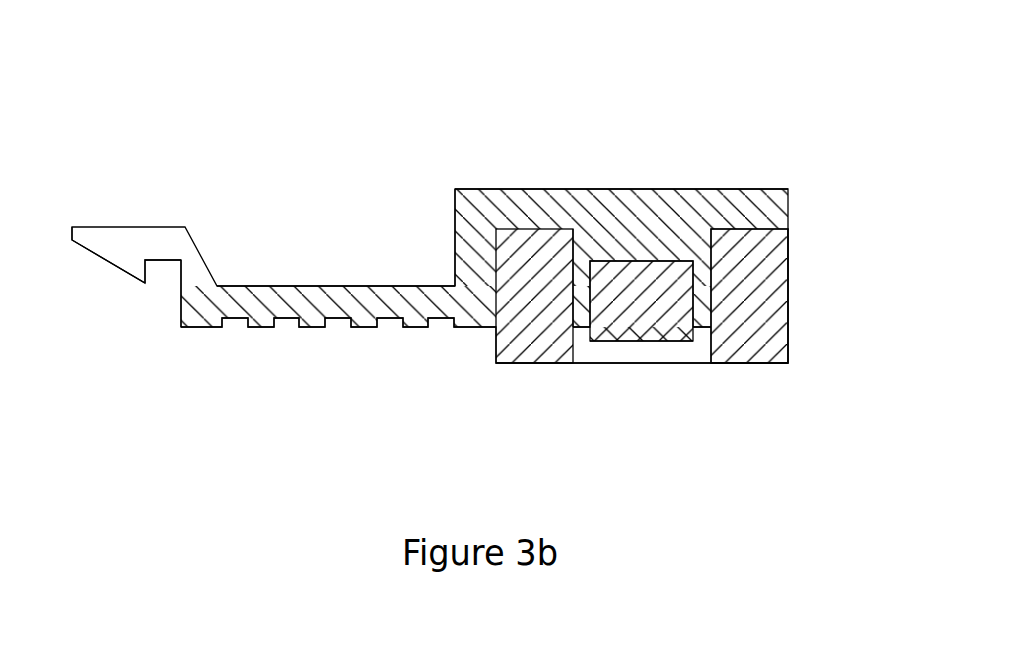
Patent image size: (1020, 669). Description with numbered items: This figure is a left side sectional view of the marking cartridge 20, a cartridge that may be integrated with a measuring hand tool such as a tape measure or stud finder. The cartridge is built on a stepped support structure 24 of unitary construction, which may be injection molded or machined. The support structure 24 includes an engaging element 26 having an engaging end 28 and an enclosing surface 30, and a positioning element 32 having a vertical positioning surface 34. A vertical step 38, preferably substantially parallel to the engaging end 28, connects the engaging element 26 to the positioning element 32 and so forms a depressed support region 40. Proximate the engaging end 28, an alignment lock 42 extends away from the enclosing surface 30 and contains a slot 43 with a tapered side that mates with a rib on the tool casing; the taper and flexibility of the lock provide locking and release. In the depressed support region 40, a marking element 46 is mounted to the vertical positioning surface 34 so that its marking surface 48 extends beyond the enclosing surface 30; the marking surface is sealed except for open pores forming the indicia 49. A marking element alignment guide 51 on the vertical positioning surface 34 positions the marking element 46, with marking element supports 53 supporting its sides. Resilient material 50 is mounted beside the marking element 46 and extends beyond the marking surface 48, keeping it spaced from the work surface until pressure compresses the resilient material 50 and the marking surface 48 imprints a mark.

The marking cartridge 20 is at (605, 67).
The support structure 24 is at (788, 189).
The engaging element 26 is at (265, 297).
The engaging end 28 is at (178, 317).
The enclosing surface 30 is at (318, 331).
The positioning element 32 is at (627, 213).
The vertical positioning surface 34 is at (608, 260).
The vertical step 38 is at (467, 262).
The depressed support region 40 is at (790, 229).
The alignment lock 42 is at (114, 250).
The slot 43 is at (170, 267).
The marking element 46 is at (660, 313).
The marking surface 48 is at (607, 341).
The indicia 49 is at (638, 341).
The resilient material 50 is at (552, 313).
The marking element alignment guide 51 is at (577, 248).
The marking element supports 53 is at (552, 353).